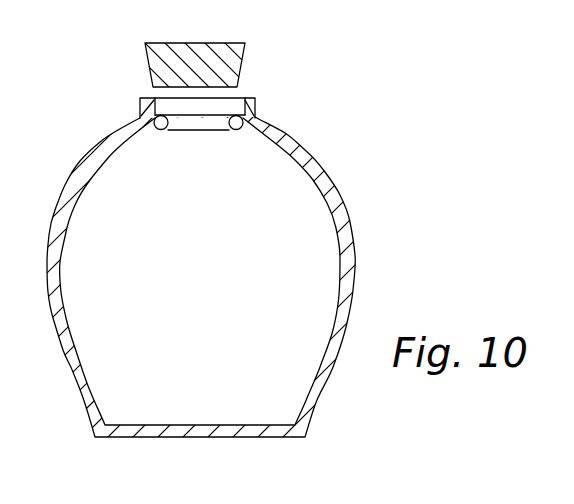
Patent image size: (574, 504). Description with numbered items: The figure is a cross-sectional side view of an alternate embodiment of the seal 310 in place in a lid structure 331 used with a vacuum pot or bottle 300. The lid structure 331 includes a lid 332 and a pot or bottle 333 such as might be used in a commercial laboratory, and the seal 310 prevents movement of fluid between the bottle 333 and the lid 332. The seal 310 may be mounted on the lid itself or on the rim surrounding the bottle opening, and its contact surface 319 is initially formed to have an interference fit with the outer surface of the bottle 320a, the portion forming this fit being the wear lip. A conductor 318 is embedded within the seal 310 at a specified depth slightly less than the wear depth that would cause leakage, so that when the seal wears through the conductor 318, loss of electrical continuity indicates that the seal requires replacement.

The vacuum pot or bottle 300 is at (332, 174).
The seal 310 is at (236, 130).
The conductor 318 is at (162, 130).
The contact surface 319 is at (155, 98).
The outer surface of the bottle 320a is at (155, 135).
The lid structure 331 is at (202, 44).
The lid 332 is at (221, 62).
The pot or bottle 333 is at (352, 272).